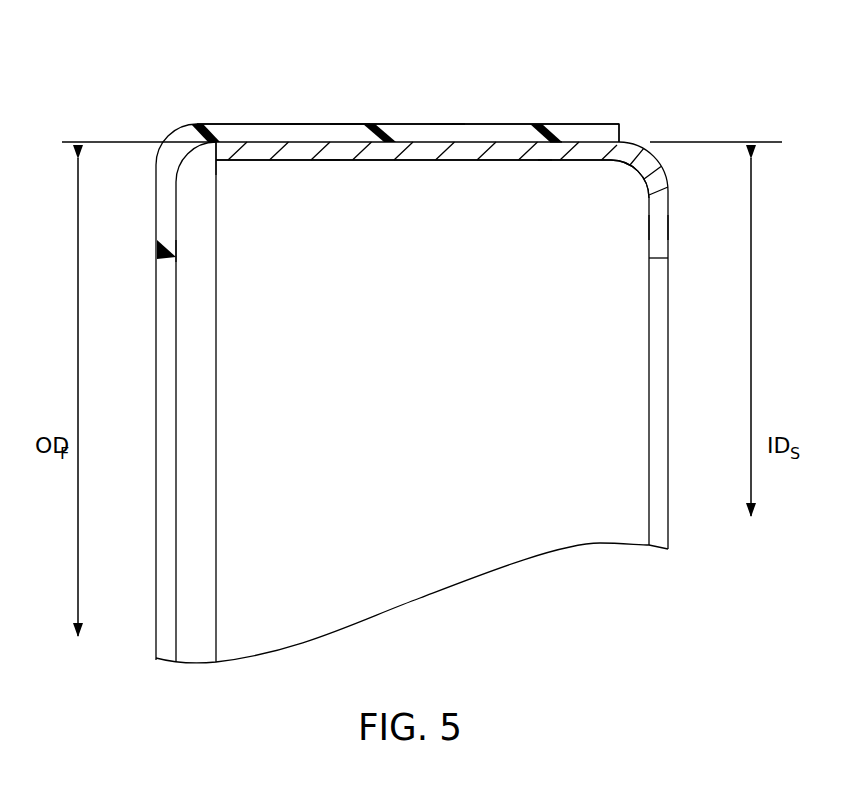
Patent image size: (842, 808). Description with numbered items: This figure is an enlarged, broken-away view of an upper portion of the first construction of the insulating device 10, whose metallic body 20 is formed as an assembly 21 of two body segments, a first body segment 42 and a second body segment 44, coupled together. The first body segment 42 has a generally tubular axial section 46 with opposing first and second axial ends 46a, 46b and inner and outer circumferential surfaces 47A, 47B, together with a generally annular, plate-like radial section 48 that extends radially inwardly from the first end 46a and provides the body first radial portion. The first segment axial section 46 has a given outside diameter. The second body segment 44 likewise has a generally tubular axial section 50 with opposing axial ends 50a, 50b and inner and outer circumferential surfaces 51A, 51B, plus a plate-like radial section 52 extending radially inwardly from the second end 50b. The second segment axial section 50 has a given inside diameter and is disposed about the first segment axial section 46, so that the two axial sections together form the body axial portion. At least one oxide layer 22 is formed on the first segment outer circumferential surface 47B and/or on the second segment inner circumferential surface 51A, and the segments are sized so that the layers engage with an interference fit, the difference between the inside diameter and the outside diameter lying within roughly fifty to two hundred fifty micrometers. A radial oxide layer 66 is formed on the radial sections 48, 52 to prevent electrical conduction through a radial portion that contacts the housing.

The insulating device 10 is at (282, 78).
The metallic body 20 is at (446, 98).
The assembly 21 is at (350, 98).
The oxide layer 22 is at (394, 130).
The first body segment 42 is at (496, 172).
The second body segment 44 is at (532, 119).
The first segment axial section 46 is at (432, 160).
The first axial end 46a is at (639, 156).
The second axial end 46b is at (218, 150).
The inner circumferential surface 47A is at (331, 162).
The outer circumferential surface 47B is at (299, 140).
The first segment radial section 48 is at (656, 225).
The second segment axial section 50 is at (487, 128).
The first axial end 50a is at (608, 130).
The second axial end 50b is at (190, 134).
The inner circumferential surface 51A is at (543, 146).
The outer circumferential surface 51B is at (560, 122).
The second segment radial section 52 is at (152, 232).
The radial oxide layer 66 is at (180, 252).